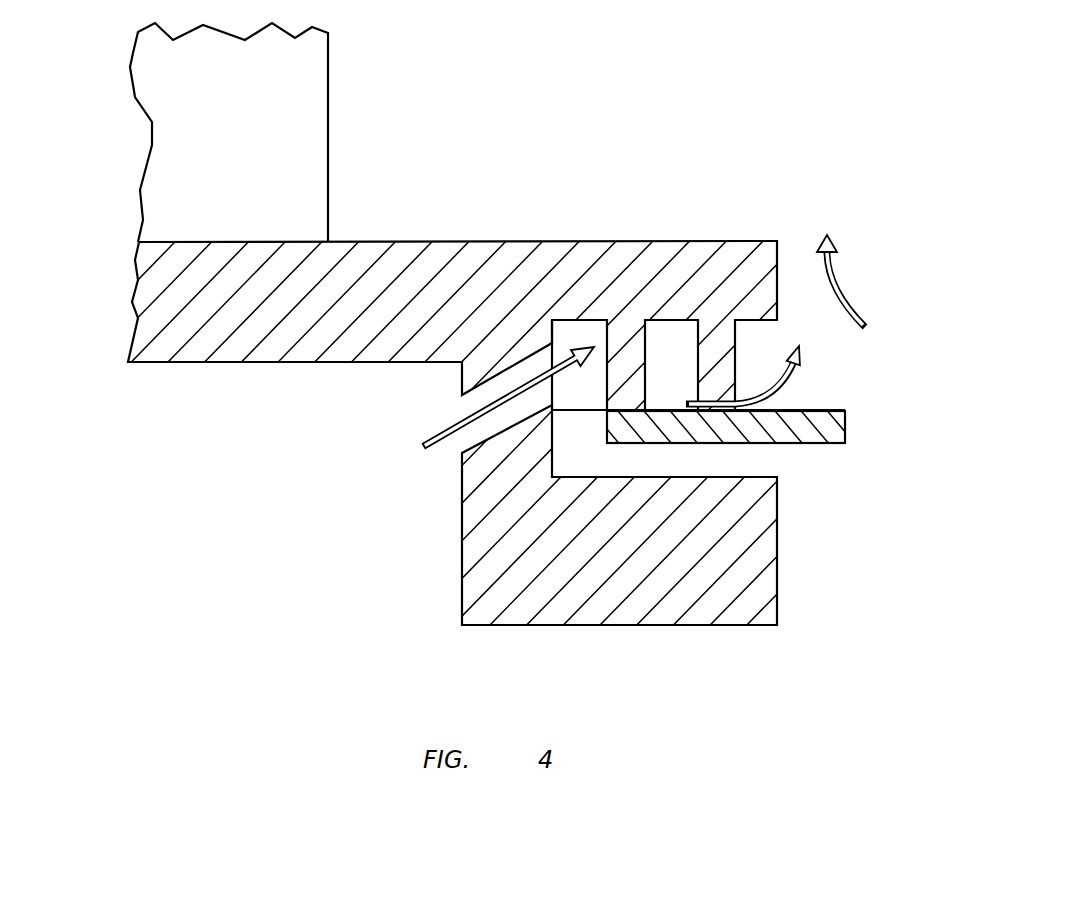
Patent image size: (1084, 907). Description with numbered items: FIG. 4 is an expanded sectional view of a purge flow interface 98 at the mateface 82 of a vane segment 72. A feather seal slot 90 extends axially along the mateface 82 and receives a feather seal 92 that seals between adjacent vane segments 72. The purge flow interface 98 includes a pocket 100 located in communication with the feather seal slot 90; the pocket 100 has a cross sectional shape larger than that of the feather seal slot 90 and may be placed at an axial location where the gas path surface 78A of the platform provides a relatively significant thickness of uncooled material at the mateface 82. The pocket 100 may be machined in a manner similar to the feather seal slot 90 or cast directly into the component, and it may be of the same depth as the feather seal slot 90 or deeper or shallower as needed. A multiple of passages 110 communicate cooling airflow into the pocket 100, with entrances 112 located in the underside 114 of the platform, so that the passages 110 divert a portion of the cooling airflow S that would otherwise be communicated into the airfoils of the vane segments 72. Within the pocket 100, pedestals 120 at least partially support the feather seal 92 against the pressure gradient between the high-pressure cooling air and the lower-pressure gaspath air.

The vane segment 72 is at (127, 177).
The gas path surface 78A is at (535, 298).
The mateface 82 is at (778, 296).
The feather seal slot 90 is at (793, 458).
The feather seal 92 is at (820, 443).
The purge flow interface 98 is at (873, 367).
The pocket 100 is at (778, 384).
The passages 110 is at (495, 423).
The entrances 112 is at (461, 438).
The underside 114 is at (218, 365).
The pedestals 120 is at (625, 348).
The cooling airflow S is at (440, 447).